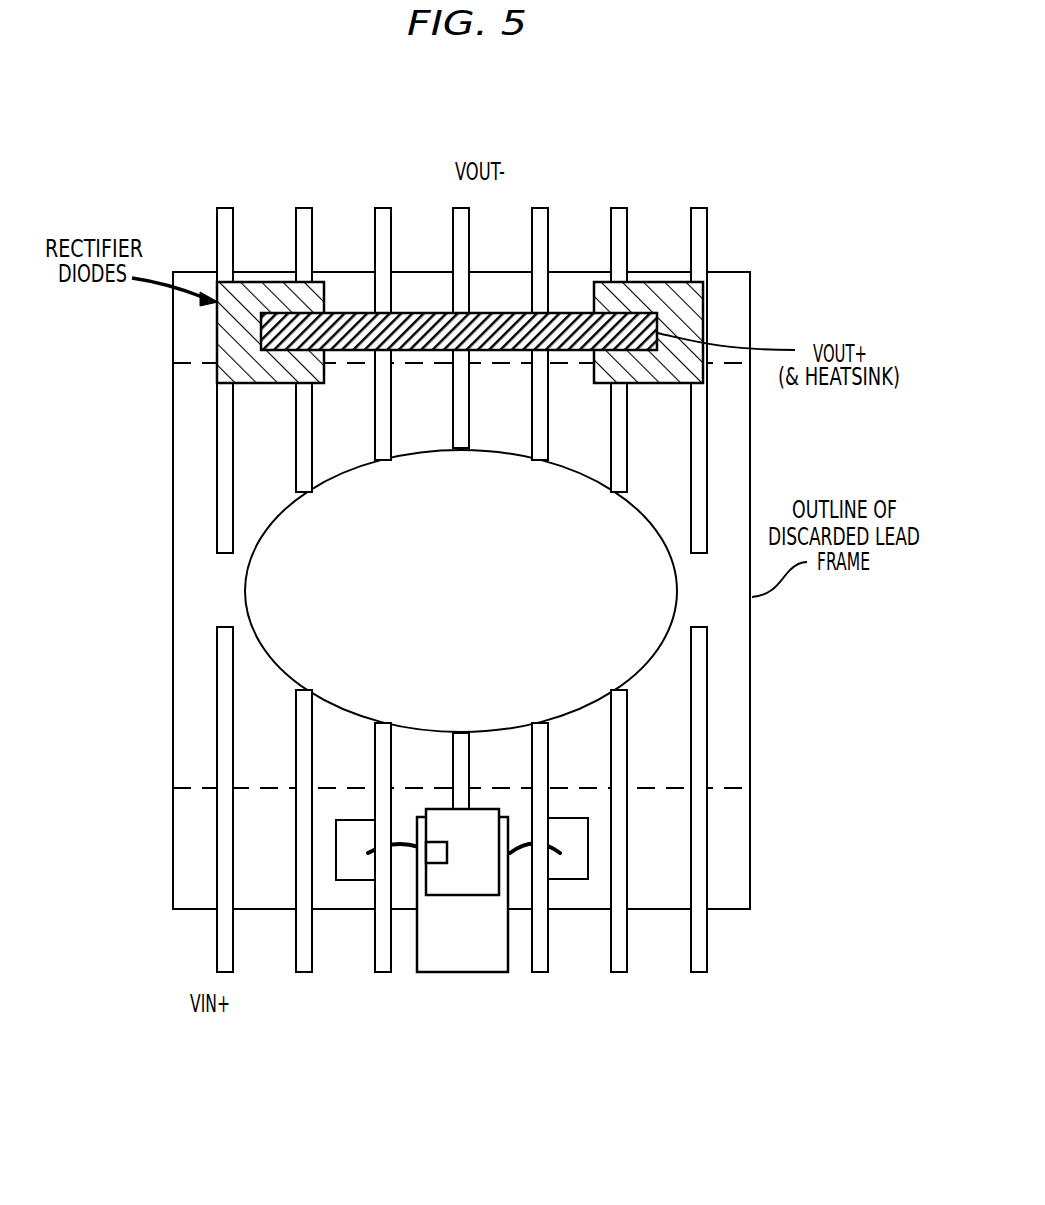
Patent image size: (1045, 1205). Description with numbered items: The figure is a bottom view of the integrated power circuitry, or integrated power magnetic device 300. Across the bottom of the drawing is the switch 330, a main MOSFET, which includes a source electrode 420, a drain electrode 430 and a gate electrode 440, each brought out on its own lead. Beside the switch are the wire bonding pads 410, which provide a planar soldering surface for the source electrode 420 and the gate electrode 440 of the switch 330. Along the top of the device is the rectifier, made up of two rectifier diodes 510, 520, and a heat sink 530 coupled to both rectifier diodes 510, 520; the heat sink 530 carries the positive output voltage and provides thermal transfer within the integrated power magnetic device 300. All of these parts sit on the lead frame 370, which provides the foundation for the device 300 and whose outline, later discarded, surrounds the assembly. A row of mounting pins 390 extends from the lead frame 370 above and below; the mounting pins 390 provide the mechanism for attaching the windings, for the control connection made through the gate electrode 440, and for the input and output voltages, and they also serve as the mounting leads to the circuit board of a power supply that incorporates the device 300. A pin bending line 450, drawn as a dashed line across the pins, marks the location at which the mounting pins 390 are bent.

The integrated power magnetic device 300 is at (276, 106).
The switch 330 is at (499, 883).
The lead frame 370 is at (217, 521).
The mounting pins 390 is at (217, 237).
The wire bonding pads 410 is at (588, 848).
The source electrode 420 is at (537, 965).
The drain electrode 430 is at (432, 974).
The gate electrode 440 is at (375, 957).
The pin bending line 450 is at (728, 787).
The rectifier diode 510 is at (703, 314).
The rectifier diode 520 is at (215, 333).
The heat sink 530 is at (565, 313).